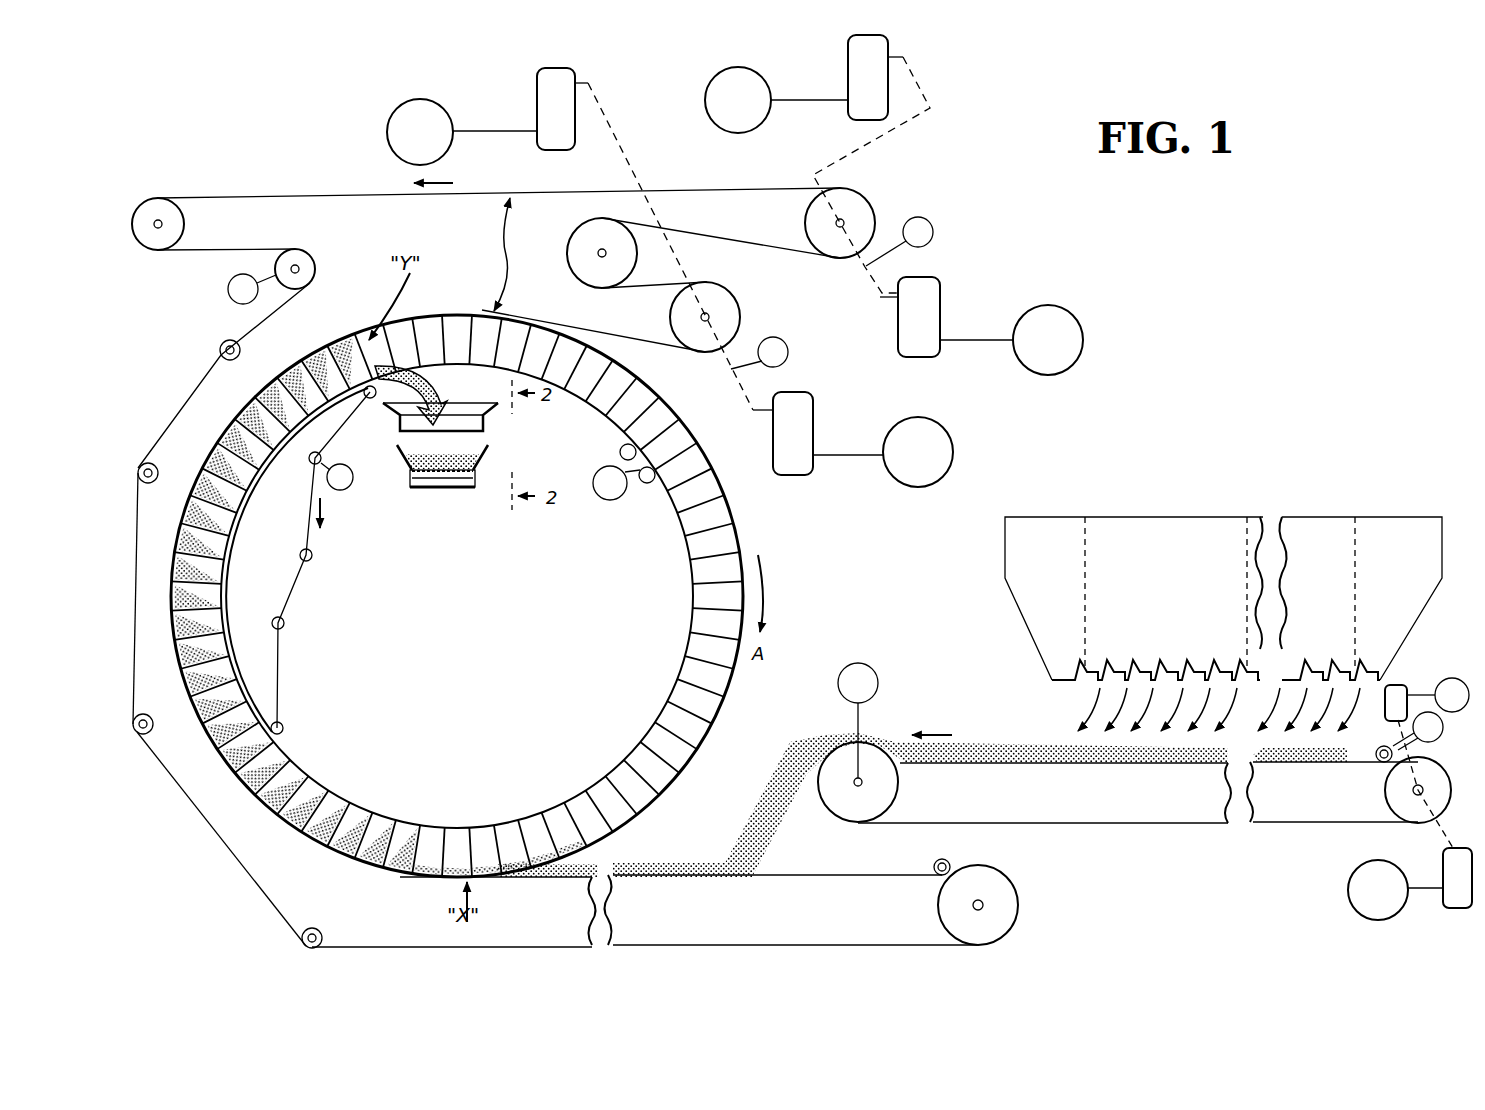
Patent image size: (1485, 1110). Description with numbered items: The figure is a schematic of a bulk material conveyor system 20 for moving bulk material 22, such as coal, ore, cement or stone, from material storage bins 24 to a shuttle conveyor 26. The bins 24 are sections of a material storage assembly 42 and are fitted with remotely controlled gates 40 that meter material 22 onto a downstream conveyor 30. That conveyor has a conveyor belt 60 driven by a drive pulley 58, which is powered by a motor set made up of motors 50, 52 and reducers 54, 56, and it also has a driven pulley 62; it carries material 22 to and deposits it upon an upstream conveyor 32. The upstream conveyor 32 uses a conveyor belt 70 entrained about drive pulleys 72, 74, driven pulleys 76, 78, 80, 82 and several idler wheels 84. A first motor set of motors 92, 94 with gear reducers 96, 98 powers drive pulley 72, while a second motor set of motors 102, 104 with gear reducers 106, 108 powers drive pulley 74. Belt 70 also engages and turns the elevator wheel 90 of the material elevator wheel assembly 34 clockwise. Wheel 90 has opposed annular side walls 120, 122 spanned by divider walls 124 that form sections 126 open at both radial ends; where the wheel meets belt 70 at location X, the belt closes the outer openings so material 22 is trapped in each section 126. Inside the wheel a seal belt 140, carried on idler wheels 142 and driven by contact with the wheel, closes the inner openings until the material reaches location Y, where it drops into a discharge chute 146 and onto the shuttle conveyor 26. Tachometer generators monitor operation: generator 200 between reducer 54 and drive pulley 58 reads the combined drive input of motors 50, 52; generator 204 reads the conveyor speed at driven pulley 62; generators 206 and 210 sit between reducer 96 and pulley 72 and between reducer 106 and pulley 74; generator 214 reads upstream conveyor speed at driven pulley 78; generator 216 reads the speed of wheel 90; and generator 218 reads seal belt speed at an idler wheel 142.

The bulk material conveyor system 20 is at (1133, 410).
The bulk material 22 is at (643, 862).
The material storage bins 24 is at (1310, 520).
The shuttle conveyor 26 is at (455, 498).
The downstream conveyor 30 is at (1248, 840).
The upstream conveyor 32 is at (982, 950).
The material elevator wheel assembly 34 is at (767, 516).
The remotely controlled gates 40 is at (1071, 638).
The material storage assembly 42 is at (1385, 488).
The motor 50 is at (1377, 915).
The motor 52 is at (1453, 678).
The reducer 54 is at (1447, 903).
The reducer 56 is at (1397, 686).
The drive pulley 58 is at (1438, 778).
The conveyor belt 60 is at (1135, 823).
The driven pulley 62 is at (876, 752).
The conveyor belt 70 is at (865, 875).
The drive pulley 72 is at (868, 202).
The drive pulley 74 is at (740, 315).
The driven pulley 76 is at (577, 267).
The driven pulley 78 is at (312, 283).
The driven pulley 80 is at (184, 224).
The driven pulley 82 is at (1008, 907).
The idler wheels 84 is at (231, 360).
The elevator wheel 90 is at (725, 704).
The motor 92 is at (1083, 327).
The motor 94 is at (722, 73).
The gear reducer 96 is at (940, 288).
The gear reducer 98 is at (888, 45).
The motor 102 is at (953, 460).
The motor 104 is at (387, 132).
The gear reducer 106 is at (803, 463).
The gear reducer 108 is at (560, 75).
The annular side wall 120 is at (705, 486).
The annular side wall 122 is at (700, 458).
The divider walls 124 is at (673, 710).
The sections 126 is at (683, 755).
The seal belt 140 is at (297, 587).
The idler wheels 142 is at (300, 492).
The discharge chute 146 is at (487, 425).
The tachometer generator 200 is at (1398, 737).
The tachometer generator 204 is at (860, 662).
The tachometer generator 206 is at (930, 220).
The tachometer generator 210 is at (790, 354).
The tachometer generator 214 is at (233, 297).
The tachometer generator 216 is at (605, 500).
The tachometer generator 218 is at (350, 483).